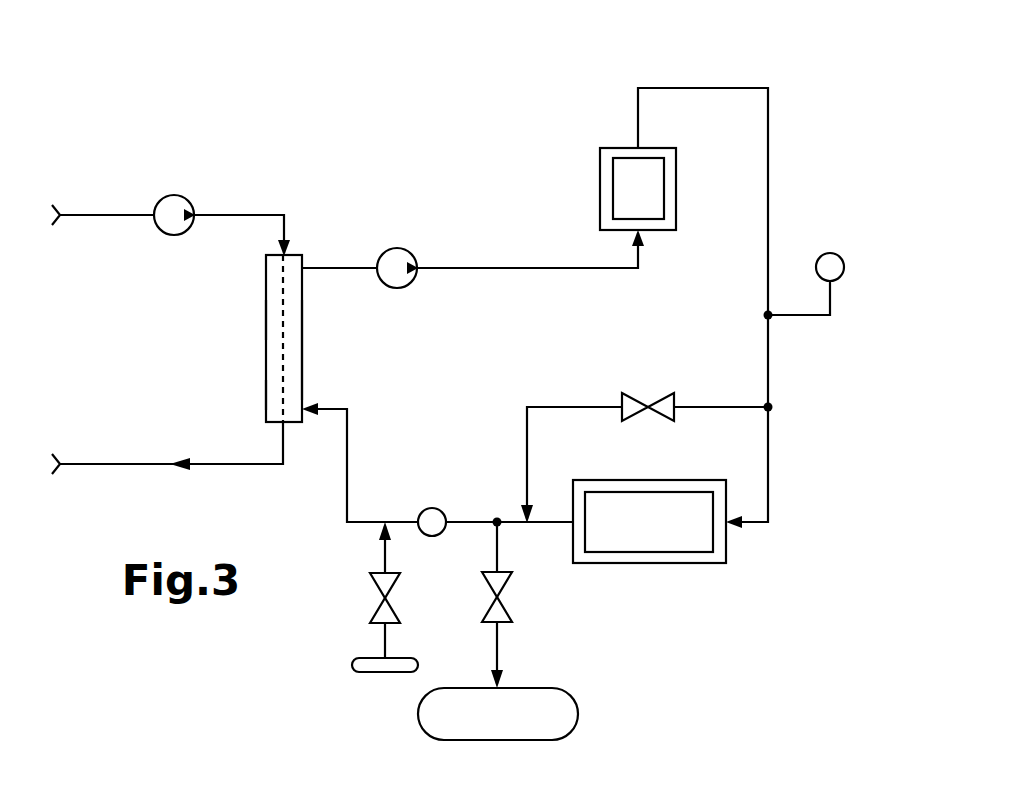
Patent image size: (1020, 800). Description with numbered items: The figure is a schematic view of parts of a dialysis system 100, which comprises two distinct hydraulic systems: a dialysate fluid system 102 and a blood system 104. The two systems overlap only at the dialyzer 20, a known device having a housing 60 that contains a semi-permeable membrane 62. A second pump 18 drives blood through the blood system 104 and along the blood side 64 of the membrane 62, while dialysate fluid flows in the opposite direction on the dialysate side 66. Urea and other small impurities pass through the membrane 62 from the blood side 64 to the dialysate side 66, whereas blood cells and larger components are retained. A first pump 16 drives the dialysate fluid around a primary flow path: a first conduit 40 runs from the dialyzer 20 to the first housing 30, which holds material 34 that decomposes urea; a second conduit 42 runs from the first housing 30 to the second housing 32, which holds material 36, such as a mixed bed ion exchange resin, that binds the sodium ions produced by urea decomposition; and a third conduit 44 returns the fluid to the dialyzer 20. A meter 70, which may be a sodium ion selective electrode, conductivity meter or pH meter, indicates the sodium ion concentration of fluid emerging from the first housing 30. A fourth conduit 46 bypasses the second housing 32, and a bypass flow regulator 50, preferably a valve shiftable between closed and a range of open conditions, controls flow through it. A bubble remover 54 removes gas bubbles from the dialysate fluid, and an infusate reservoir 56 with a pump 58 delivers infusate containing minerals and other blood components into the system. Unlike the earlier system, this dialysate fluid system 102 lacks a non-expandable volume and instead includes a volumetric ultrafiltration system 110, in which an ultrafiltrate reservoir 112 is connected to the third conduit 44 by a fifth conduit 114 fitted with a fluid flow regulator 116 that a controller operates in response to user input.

The dialysis system 100 is at (175, 138).
The blood hydraulic system 104 is at (239, 205).
The second pump 18 is at (173, 236).
The dialyzer 20 is at (266, 271).
The housing 60 is at (266, 316).
The semi-permeable membrane 62 is at (283, 350).
The blood side 64 is at (275, 394).
The dialysate side 66 is at (292, 376).
The dialysate fluid hydraulic system 102 is at (350, 258).
The first pump 16 is at (402, 250).
The first conduit 40 is at (494, 268).
The first housing 30 is at (600, 166).
The material 34 is at (628, 188).
The second conduit 42 is at (702, 88).
The meter 70 is at (830, 253).
The fourth conduit 46 is at (558, 407).
The bypass flow regulator 50 is at (657, 398).
The second housing 32 is at (643, 565).
The material 36 is at (658, 528).
The third conduit 44 is at (347, 440).
The bubble remover 54 is at (432, 508).
The pump 58 is at (370, 587).
The infusate reservoir 56 is at (352, 664).
The fluid flow regulator 116 is at (505, 585).
The fifth conduit 114 is at (500, 655).
The volumetric ultrafiltration system 110 is at (608, 692).
The ultrafiltrate reservoir 112 is at (570, 725).